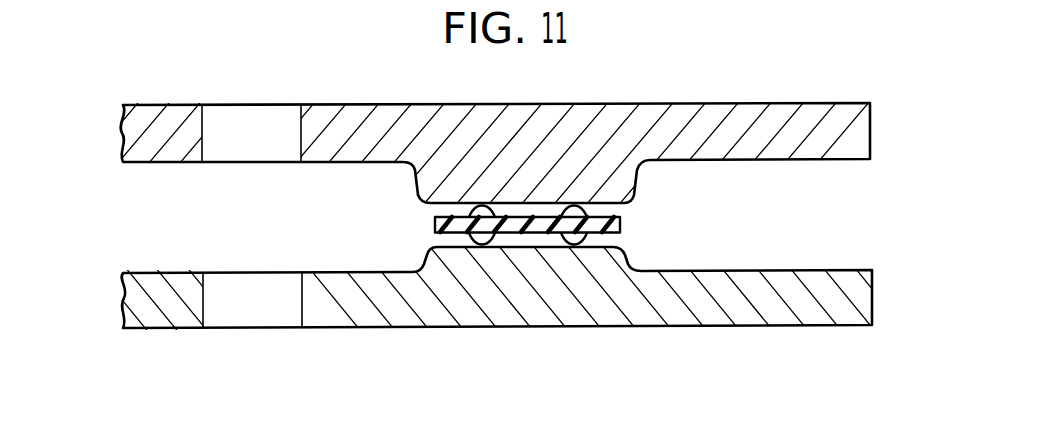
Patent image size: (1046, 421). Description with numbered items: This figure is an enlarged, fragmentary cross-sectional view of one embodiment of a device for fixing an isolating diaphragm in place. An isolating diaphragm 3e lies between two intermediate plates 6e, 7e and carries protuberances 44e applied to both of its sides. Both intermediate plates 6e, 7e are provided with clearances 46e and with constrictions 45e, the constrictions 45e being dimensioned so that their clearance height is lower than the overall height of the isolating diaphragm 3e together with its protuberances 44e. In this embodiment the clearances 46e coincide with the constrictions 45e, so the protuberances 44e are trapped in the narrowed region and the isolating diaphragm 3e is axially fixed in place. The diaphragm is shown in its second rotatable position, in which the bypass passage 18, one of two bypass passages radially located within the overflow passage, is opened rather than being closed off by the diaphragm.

The intermediate plate 6e is at (852, 131).
The intermediate plate 7e is at (843, 300).
The bypass passage 18 is at (256, 306).
The protuberances 44e is at (574, 244).
The isolating diaphragm 3e is at (622, 224).
The constriction 45e is at (439, 212).
The clearance 46e is at (141, 216).